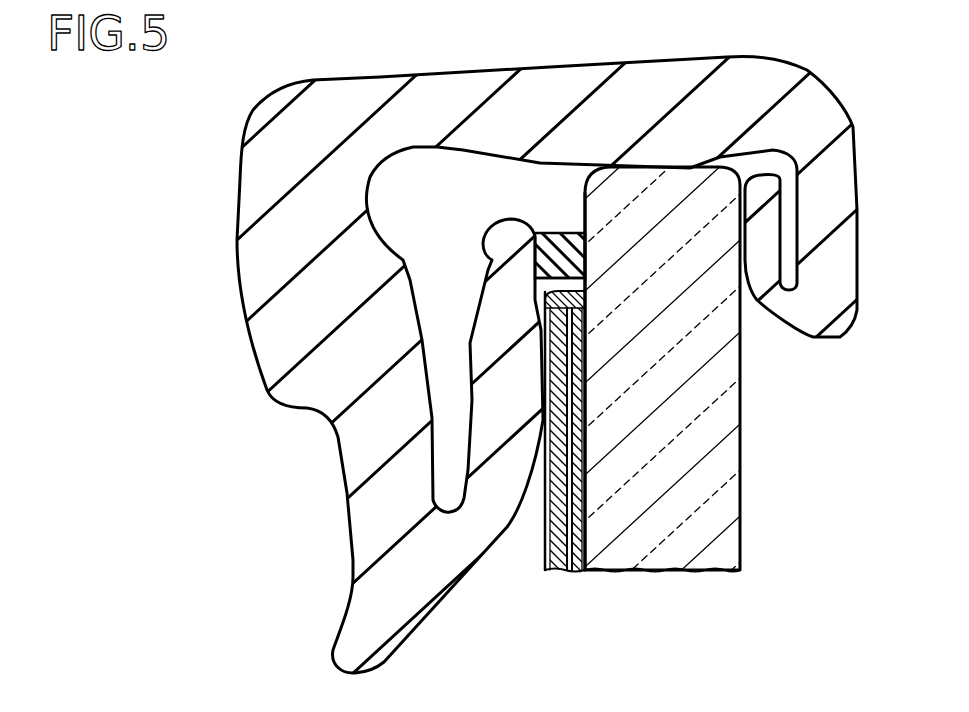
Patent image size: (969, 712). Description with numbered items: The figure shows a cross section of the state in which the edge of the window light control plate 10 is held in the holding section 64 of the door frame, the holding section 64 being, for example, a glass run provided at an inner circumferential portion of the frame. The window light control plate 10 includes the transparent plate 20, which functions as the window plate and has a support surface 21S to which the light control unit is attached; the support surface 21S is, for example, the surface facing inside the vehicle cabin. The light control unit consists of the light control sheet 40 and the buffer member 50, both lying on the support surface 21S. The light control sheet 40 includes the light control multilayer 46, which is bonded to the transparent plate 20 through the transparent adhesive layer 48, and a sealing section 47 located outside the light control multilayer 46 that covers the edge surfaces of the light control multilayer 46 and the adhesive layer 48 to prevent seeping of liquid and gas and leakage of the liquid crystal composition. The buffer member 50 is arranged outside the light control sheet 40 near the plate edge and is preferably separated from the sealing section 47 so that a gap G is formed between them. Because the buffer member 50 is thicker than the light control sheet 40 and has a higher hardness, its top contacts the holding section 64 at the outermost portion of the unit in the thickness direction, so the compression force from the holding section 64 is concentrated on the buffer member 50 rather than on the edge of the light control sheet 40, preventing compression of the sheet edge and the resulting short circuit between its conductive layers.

The window light control plate 10 is at (635, 378).
The transparent plate 20 is at (743, 443).
The support surface 21S is at (585, 212).
The light control sheet 40 is at (545, 528).
The light control multilayer 46 is at (562, 571).
The sealing section 47 is at (545, 292).
The adhesive layer 48 is at (580, 571).
The buffer member 50 is at (542, 232).
The holding section 64 is at (836, 88).
The gap G is at (604, 285).